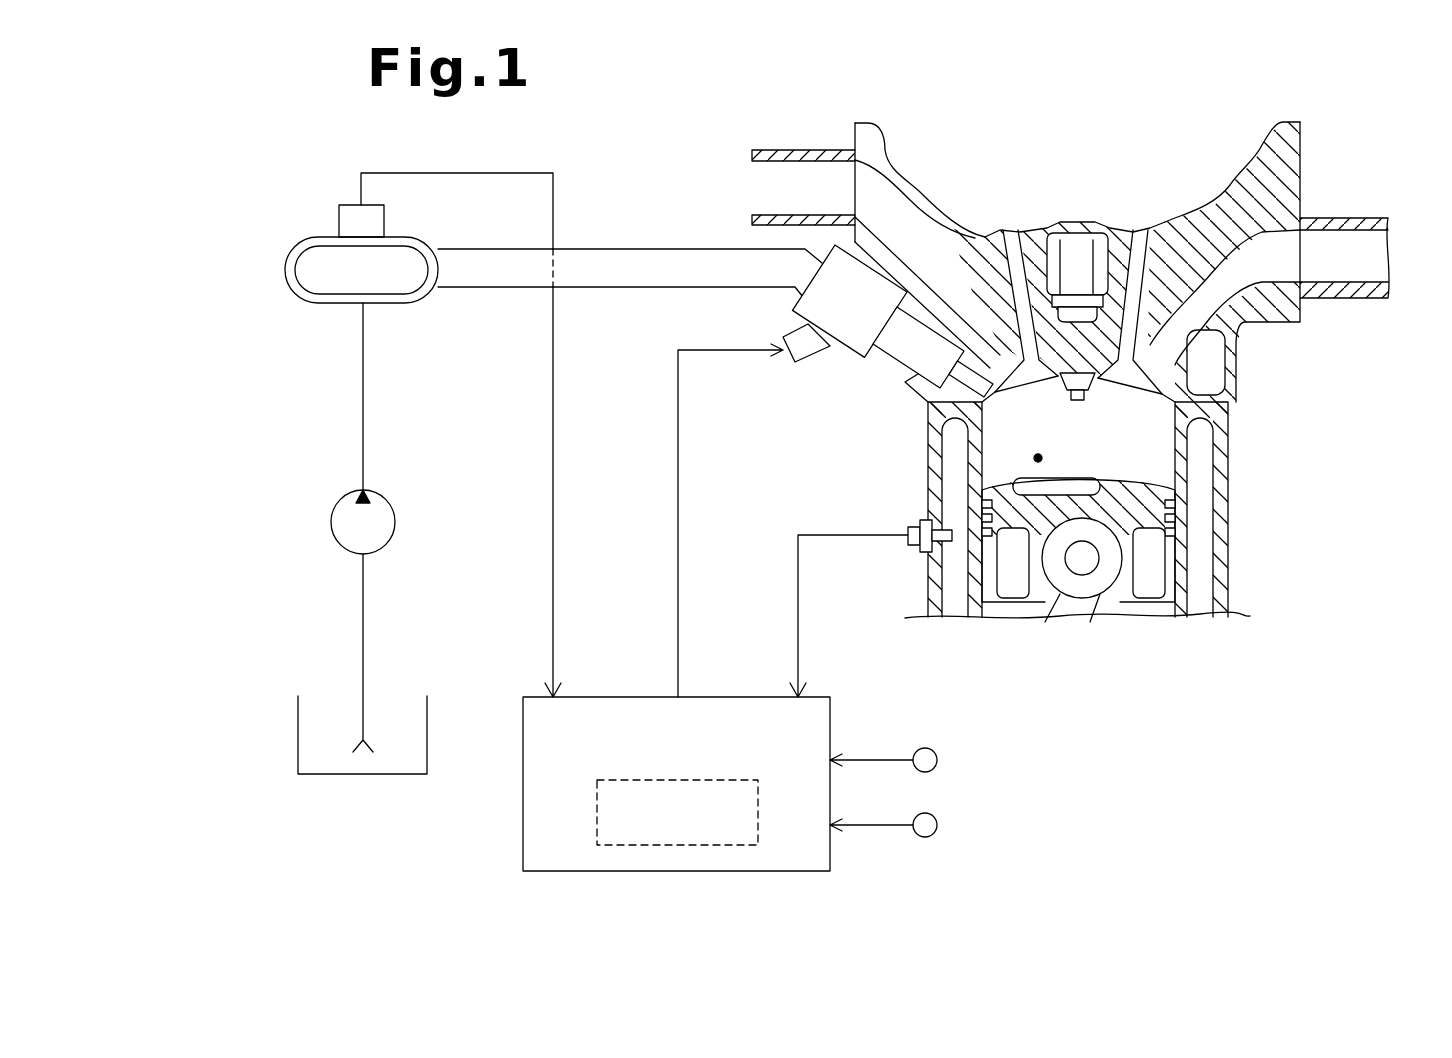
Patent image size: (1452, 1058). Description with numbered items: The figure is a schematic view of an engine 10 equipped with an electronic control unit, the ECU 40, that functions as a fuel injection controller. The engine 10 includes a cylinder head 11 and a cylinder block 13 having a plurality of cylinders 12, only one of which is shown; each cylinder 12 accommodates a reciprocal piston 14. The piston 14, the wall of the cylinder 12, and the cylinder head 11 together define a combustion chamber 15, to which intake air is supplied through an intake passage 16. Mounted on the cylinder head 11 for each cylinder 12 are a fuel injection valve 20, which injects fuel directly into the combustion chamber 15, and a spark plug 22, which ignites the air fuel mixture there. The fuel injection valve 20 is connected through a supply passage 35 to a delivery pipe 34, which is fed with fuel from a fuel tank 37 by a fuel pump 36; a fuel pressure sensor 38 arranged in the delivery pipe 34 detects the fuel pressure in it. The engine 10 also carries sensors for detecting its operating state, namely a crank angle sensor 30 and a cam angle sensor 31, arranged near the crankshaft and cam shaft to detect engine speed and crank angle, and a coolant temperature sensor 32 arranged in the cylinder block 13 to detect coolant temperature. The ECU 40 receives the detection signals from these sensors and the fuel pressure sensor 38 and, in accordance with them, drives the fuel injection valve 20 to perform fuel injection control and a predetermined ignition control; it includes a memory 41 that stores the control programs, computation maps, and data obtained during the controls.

The engine 10 is at (1075, 380).
The cylinder head 11 is at (1242, 330).
The cylinder 12 is at (1163, 625).
The cylinder block 13 is at (1228, 498).
The piston 14 is at (1140, 585).
The combustion chamber 15 is at (1038, 458).
The intake passage 16 is at (787, 170).
The fuel injection valve 20 is at (853, 327).
The spark plug 22 is at (1093, 400).
The crank angle sensor 30 is at (937, 760).
The cam angle sensor 31 is at (937, 825).
The coolant temperature sensor 32 is at (905, 546).
The delivery pipe 34 is at (285, 265).
The supply passage 35 is at (494, 288).
The fuel pump 36 is at (331, 521).
The fuel tank 37 is at (298, 735).
The fuel pressure sensor 38 is at (339, 220).
The electronic control unit 40 is at (783, 871).
The memory 41 is at (672, 780).